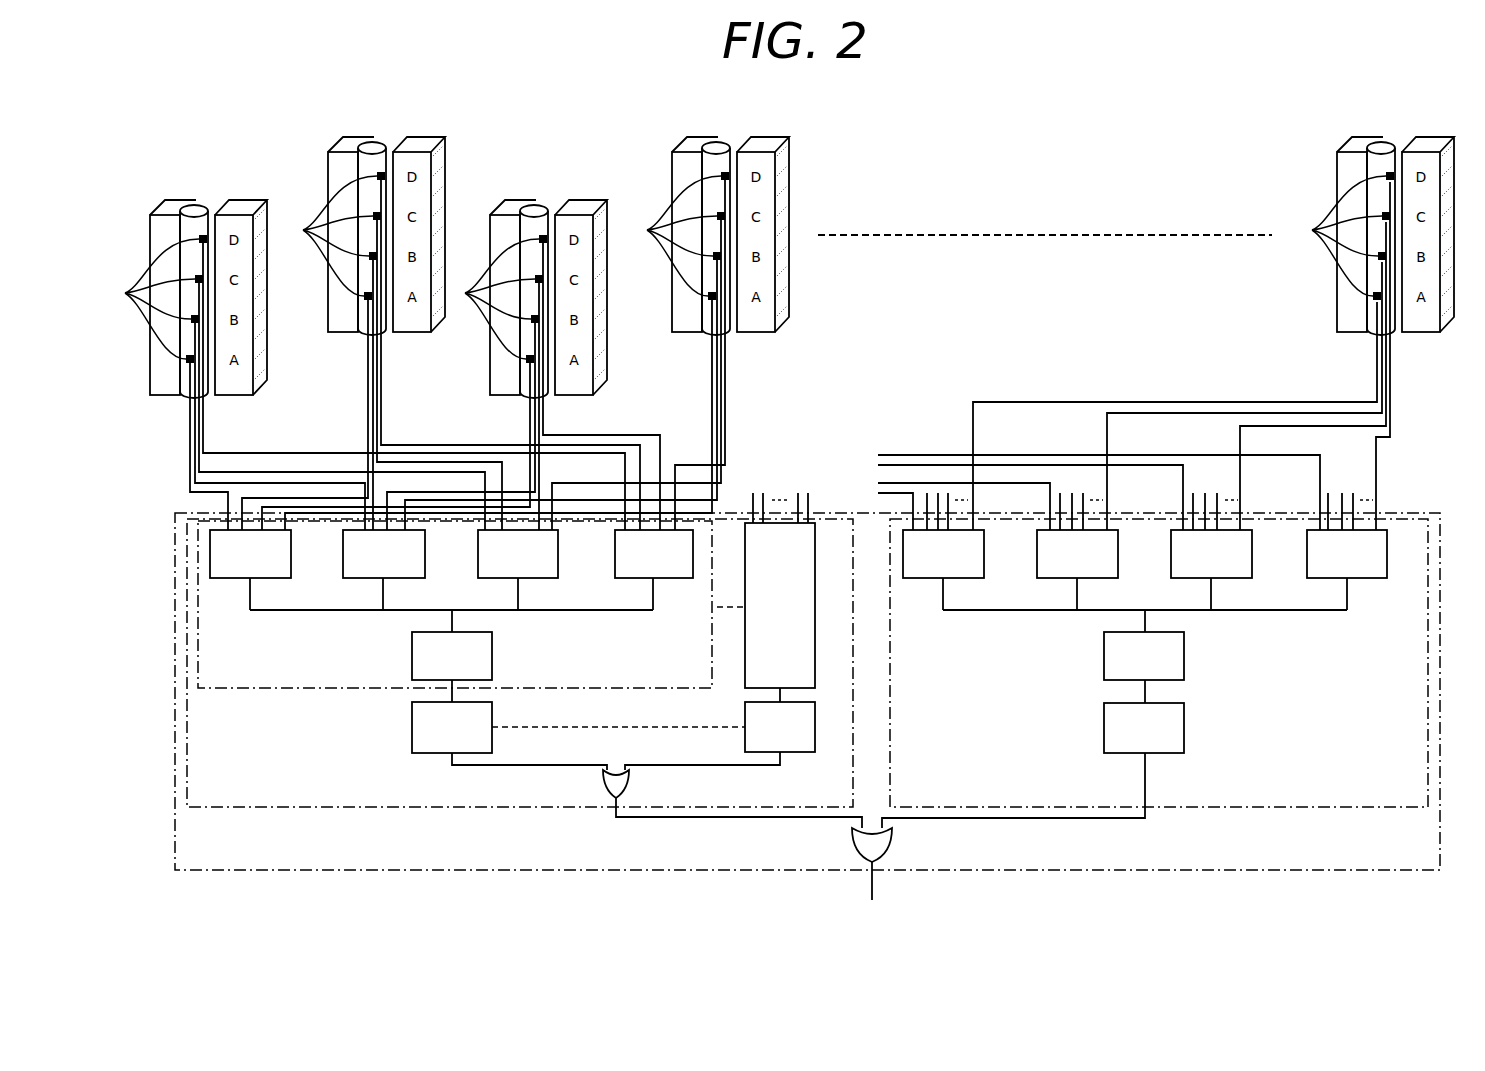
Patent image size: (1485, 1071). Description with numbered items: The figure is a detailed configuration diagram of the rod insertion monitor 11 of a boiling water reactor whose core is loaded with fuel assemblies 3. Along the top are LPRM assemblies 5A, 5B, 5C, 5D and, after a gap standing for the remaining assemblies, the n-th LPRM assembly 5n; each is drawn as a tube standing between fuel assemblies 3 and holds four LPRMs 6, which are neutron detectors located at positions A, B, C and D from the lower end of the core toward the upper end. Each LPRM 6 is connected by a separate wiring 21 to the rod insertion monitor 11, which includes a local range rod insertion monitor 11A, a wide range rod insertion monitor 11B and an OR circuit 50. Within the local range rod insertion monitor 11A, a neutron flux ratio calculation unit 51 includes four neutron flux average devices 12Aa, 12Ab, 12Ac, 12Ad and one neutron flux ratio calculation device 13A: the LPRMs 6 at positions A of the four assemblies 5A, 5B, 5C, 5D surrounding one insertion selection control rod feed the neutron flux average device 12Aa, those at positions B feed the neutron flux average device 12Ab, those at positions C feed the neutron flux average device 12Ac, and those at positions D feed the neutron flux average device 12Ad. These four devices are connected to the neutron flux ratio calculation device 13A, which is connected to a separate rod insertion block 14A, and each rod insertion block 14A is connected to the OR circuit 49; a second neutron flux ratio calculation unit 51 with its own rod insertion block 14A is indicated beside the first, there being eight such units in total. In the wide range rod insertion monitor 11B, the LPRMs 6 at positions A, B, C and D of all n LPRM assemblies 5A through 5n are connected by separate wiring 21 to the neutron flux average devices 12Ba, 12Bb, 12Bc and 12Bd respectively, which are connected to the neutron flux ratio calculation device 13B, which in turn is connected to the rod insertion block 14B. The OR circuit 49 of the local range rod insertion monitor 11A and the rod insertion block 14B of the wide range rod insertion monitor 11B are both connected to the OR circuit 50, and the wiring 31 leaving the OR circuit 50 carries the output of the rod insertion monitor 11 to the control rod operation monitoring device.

The fuel assembly 3 is at (802, 248).
The LPRM assembly 5A is at (206, 204).
The LPRM assembly 5B is at (384, 140).
The LPRM assembly 5C is at (546, 204).
The LPRM assembly 5D is at (728, 140).
The LPRM assembly 5n is at (1393, 140).
The local power range monitoring system (LPRM) 6 is at (752, 267).
The wiring 21 is at (785, 355).
The rod insertion monitor 11 is at (1425, 514).
The local range rod insertion monitor (first rod insertion monitor) 11A is at (232, 807).
The wide range rod insertion monitor (second rod insertion monitor) 11B is at (1327, 808).
The neutron flux ratio calculation unit 51 is at (523, 632).
The neutron flux average device 12Aa is at (265, 580).
The neutron flux average device 12Ab is at (400, 580).
The neutron flux average device 12Ac is at (535, 580).
The neutron flux average device 12Ad is at (670, 580).
The neutron flux average device 12Ba is at (958, 580).
The neutron flux average device 12Bb is at (1093, 580).
The neutron flux average device 12Bc is at (1228, 580).
The neutron flux average device 12Bd is at (1360, 580).
The neutron flux ratio calculation device 13A is at (412, 657).
The neutron flux ratio calculation device 13B is at (1184, 658).
The rod insertion block 14A is at (598, 688).
The rod insertion block 14B is at (1184, 736).
The OR circuit 49 is at (629, 783).
The OR circuit 50 is at (892, 839).
The wiring 31 is at (873, 889).